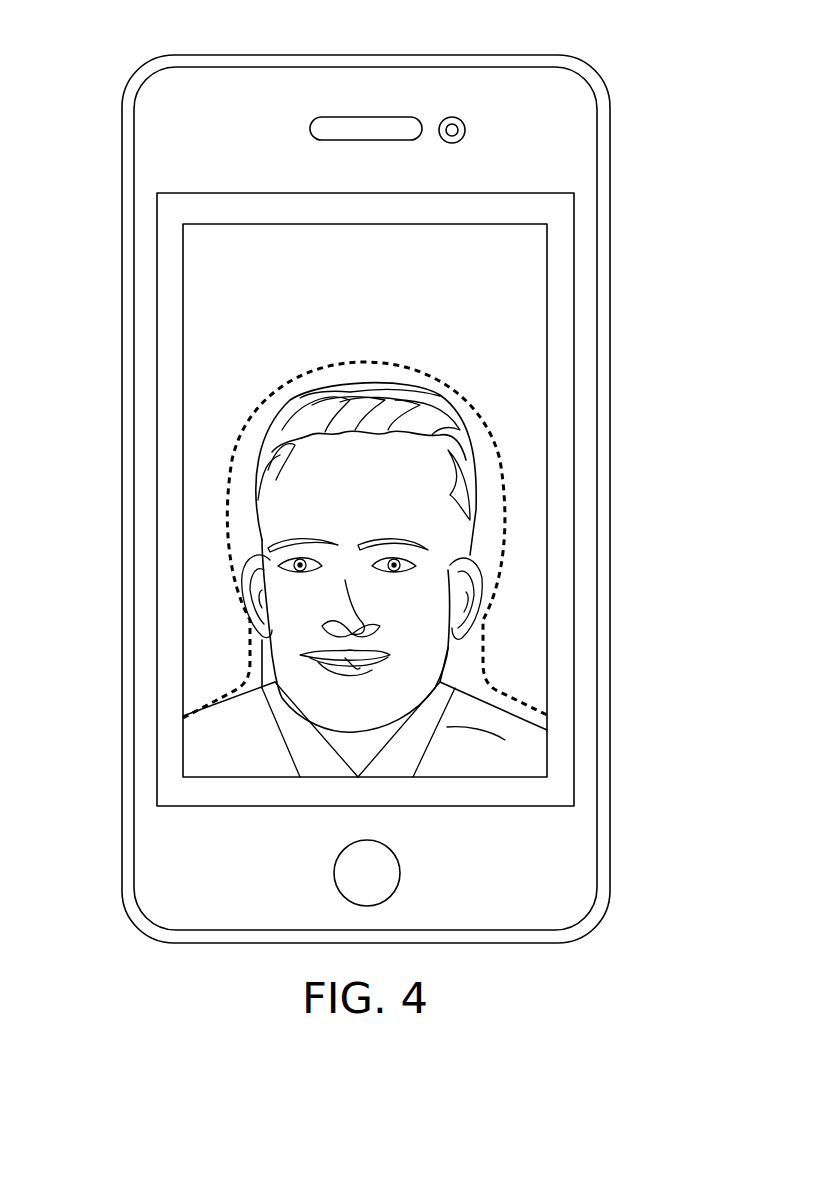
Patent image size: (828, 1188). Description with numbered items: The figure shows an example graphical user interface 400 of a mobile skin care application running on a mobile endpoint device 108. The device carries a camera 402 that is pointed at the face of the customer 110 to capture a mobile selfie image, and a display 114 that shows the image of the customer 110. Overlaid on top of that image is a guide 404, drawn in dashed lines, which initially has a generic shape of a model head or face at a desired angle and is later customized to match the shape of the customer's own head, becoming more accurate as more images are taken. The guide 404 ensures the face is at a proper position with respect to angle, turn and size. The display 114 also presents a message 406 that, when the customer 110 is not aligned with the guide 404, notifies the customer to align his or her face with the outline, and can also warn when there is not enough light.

The mobile endpoint device 108 is at (318, 55).
The camera 402 is at (453, 123).
The display 114 is at (541, 247).
The graphical user interface 400 is at (529, 433).
The message 406 is at (205, 266).
The guide 404 is at (416, 364).
The customer 110 is at (296, 405).